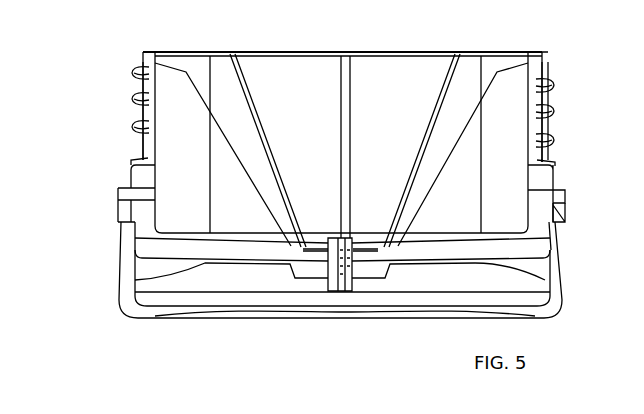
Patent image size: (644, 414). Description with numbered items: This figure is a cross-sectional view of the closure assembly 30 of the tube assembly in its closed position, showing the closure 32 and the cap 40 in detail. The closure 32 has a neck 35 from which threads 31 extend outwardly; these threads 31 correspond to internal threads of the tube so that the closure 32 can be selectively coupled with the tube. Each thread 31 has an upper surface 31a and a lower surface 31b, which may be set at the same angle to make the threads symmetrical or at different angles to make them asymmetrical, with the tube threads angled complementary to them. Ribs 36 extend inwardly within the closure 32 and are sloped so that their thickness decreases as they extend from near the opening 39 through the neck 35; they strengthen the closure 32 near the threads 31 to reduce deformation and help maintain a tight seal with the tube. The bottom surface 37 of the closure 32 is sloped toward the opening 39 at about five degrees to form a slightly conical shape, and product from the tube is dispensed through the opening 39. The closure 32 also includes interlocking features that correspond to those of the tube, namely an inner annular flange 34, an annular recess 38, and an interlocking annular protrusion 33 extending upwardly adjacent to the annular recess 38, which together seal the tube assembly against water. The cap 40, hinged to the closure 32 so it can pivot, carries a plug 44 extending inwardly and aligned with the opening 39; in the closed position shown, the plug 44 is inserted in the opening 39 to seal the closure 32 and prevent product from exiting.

The closure assembly 30 is at (67, 80).
The threads 31 is at (552, 116).
The upper surface 31a is at (141, 68).
The lower surface 31b is at (552, 92).
The closure 32 is at (568, 213).
The interlocking annular protrusion 33 is at (561, 189).
The inner annular flange 34 is at (126, 172).
The neck 35 is at (540, 62).
The ribs 36 is at (233, 98).
The bottom surface 37 is at (135, 281).
The annular recess 38 is at (558, 225).
The opening 39 is at (322, 282).
The cap 40 is at (137, 306).
The plug 44 is at (352, 286).